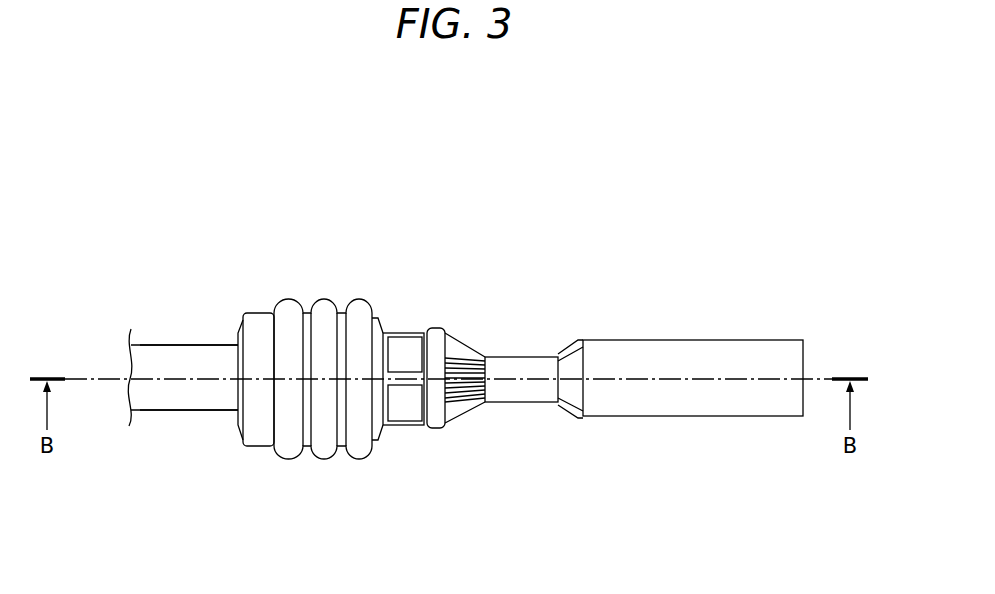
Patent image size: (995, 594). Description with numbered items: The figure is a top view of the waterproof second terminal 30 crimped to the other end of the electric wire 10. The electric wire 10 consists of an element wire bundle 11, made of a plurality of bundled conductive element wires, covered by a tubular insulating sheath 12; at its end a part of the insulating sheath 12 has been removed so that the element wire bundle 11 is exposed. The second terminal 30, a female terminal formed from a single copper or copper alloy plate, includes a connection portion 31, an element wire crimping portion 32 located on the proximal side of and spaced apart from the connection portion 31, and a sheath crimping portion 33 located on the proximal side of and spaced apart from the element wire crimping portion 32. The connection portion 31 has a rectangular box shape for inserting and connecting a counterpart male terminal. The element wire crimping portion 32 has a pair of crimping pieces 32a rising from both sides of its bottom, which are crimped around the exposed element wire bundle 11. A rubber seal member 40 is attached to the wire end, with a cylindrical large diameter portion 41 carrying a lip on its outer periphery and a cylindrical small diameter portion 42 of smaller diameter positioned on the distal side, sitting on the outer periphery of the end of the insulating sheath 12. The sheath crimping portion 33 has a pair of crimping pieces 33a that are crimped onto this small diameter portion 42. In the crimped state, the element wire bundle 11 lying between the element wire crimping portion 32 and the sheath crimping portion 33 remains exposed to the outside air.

The electric wire 10 is at (169, 338).
The element wire bundle 11 is at (467, 358).
The insulating sheath 12 is at (206, 345).
The second terminal 30 is at (644, 369).
The connection portion 31 is at (700, 416).
The element wire crimping portion 32 is at (523, 403).
The crimping pieces 32a is at (533, 367).
The sheath crimping portion 33 is at (407, 425).
The crimping pieces 33a is at (413, 356).
The seal member 40 is at (331, 367).
The large diameter portion 41 is at (323, 458).
The small diameter portion 42 is at (380, 425).